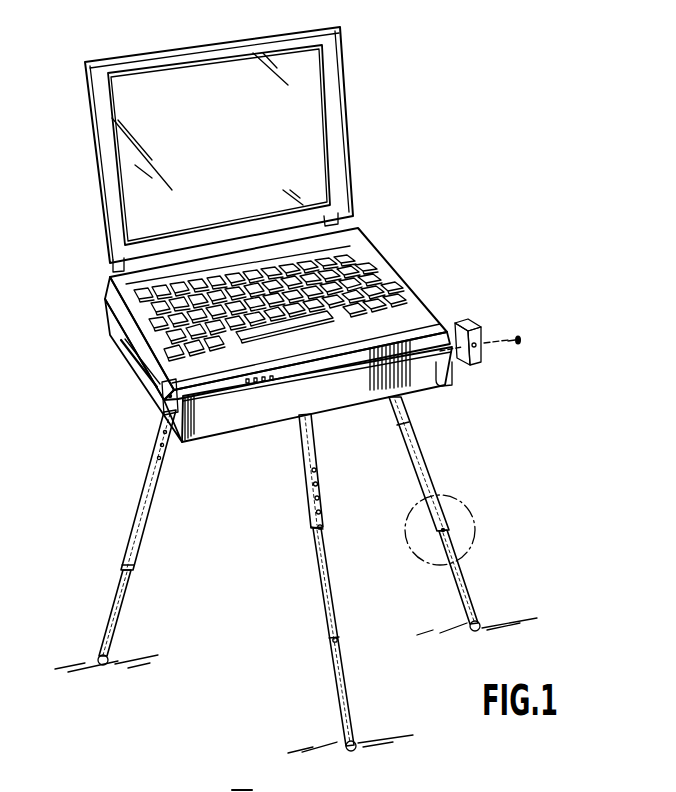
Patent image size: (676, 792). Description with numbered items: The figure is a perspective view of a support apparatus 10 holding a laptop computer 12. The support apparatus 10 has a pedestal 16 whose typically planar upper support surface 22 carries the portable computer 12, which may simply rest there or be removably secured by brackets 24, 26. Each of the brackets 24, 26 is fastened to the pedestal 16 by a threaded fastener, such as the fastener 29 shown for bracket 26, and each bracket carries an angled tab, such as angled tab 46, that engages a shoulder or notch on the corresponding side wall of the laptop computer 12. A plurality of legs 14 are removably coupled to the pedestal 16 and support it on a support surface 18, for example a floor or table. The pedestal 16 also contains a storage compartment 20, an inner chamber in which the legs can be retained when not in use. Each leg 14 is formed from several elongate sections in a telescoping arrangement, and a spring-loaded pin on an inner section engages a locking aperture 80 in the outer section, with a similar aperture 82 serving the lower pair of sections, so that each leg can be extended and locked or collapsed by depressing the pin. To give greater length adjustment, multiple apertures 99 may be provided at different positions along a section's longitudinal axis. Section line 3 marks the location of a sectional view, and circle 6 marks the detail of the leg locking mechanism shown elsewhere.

The section line 3- 3 is at (53, 17).
The detail area of FIG. 6 is at (480, 513).
The support apparatus 10 is at (418, 200).
The laptop computer 12 is at (356, 124).
The legs 14 is at (132, 498).
The pedestal 16 is at (239, 415).
The support surface 18 is at (296, 685).
The storage compartment 20 is at (122, 383).
The upper support surface 22 is at (442, 386).
The bracket 24 is at (163, 400).
The bracket 26 is at (485, 328).
The fastener 29 is at (522, 340).
The angled tab 46 is at (460, 318).
The locking aperture 80 is at (324, 527).
The aperture 82 is at (339, 641).
The apertures 99 is at (305, 470).